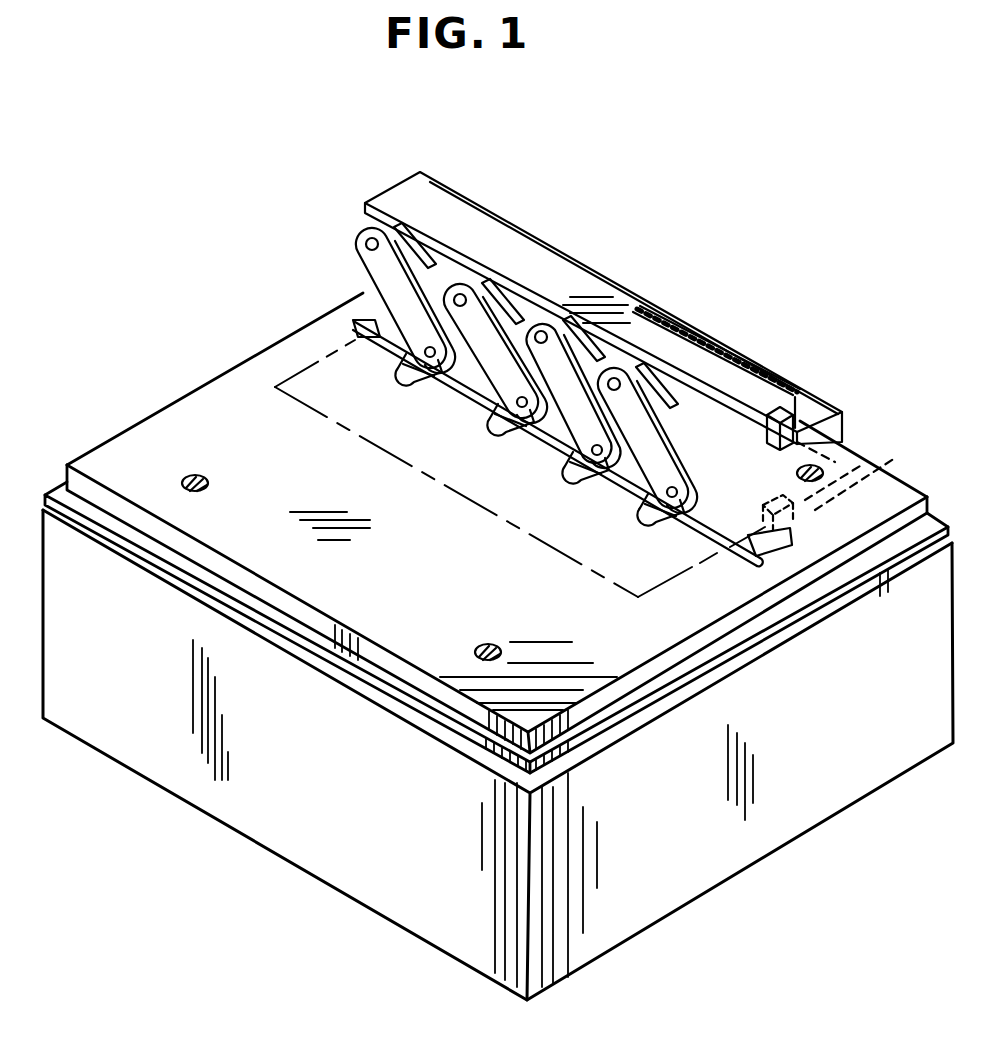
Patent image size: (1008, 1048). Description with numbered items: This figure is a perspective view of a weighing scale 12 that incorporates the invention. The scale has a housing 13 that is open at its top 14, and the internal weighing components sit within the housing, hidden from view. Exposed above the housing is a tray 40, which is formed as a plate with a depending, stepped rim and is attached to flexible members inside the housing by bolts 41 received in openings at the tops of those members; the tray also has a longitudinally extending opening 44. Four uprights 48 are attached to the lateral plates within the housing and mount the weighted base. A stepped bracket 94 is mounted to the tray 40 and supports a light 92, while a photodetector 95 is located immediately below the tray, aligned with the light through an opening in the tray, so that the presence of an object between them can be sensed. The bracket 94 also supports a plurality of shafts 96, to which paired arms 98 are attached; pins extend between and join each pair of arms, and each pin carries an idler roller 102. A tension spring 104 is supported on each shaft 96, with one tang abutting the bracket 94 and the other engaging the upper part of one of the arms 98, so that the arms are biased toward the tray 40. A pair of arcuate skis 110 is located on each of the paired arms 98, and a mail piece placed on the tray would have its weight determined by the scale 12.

The weighing scale 12 is at (205, 322).
The housing 13 is at (812, 812).
The top 14 is at (860, 598).
The tray 40 is at (452, 588).
The bolts 41 is at (210, 480).
The longitudinally extending opening 44 is at (710, 535).
The uprights 48 is at (780, 548).
The light 92 is at (793, 427).
The stepped bracket 94 is at (518, 238).
The photodetector 95 is at (880, 468).
The shafts 96 is at (362, 245).
The paired arms 98 is at (357, 277).
The idler roller 102 is at (700, 533).
The tension spring 104 is at (410, 245).
The arcuate skis 110 is at (655, 512).